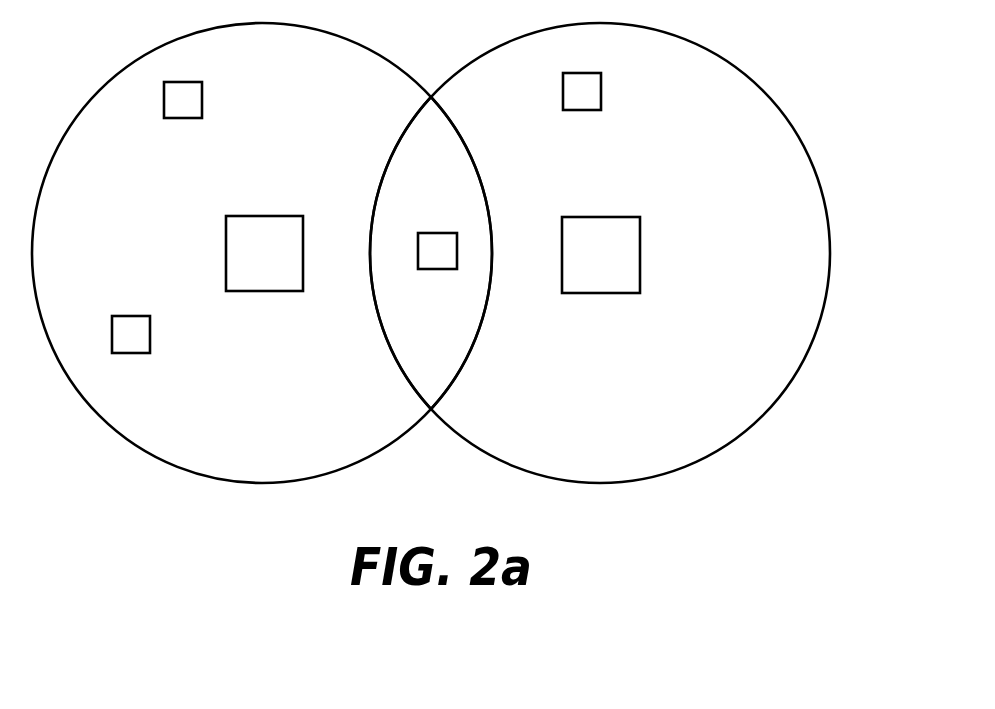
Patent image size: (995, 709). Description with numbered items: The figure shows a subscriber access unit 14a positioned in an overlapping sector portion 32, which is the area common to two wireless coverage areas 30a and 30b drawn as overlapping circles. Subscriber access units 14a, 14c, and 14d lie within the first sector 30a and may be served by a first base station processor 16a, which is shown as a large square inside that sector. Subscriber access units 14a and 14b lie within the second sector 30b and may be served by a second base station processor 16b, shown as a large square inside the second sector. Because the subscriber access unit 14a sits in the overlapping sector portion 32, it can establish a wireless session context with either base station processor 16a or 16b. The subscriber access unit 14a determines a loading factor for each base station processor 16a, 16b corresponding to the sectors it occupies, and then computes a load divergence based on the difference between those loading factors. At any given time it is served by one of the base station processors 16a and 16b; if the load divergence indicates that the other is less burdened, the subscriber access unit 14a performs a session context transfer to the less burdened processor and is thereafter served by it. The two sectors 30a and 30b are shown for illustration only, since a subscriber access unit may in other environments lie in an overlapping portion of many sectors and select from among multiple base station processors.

The subscriber access unit 14a is at (418, 258).
The subscriber access unit 14b is at (601, 83).
The subscriber access unit 14c is at (233, 125).
The subscriber access unit 14d is at (150, 332).
The first base station processor 16a is at (225, 257).
The second base station processor 16b is at (640, 250).
The wireless coverage area 30a is at (230, 483).
The wireless coverage area 30b is at (760, 88).
The overlapping sector portion 32 is at (468, 143).